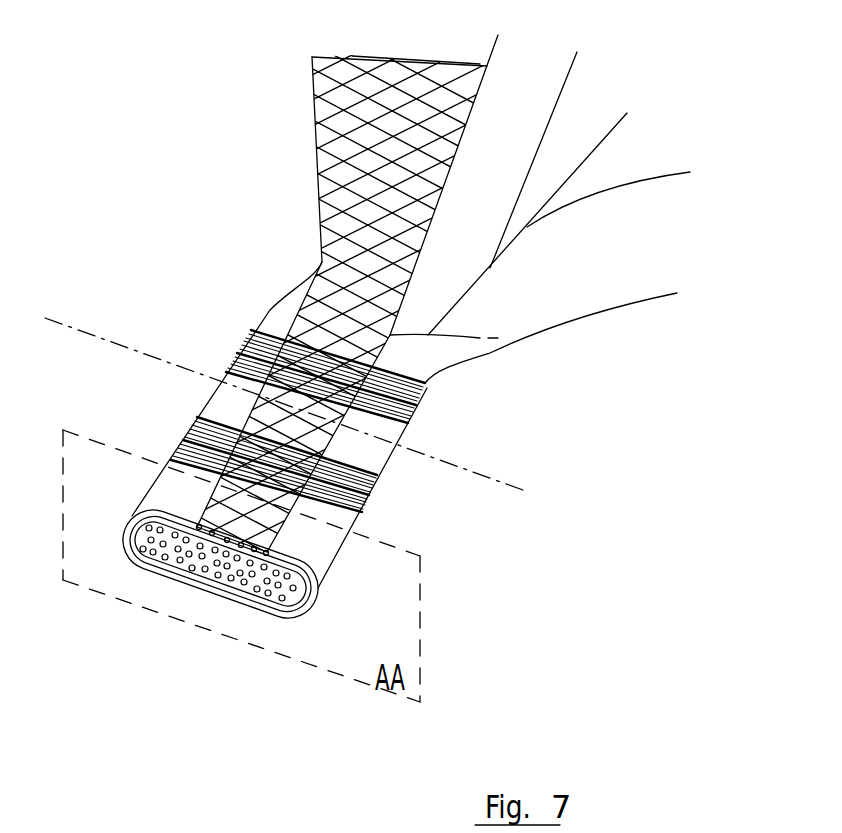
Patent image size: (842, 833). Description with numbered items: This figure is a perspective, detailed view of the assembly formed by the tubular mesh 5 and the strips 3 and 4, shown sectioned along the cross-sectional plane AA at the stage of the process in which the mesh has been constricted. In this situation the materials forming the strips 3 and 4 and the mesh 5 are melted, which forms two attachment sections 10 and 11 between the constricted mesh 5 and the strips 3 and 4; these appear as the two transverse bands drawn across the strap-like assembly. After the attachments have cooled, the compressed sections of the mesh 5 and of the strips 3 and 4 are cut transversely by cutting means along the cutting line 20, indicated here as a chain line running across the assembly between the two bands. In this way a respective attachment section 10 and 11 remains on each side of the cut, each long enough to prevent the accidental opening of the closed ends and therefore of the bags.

The strip 3 is at (593, 131).
The strip 4 is at (669, 283).
The mesh 5 is at (317, 127).
The attachment section 10 is at (381, 488).
The attachment section 11 is at (429, 401).
The cutting line 20 is at (525, 495).